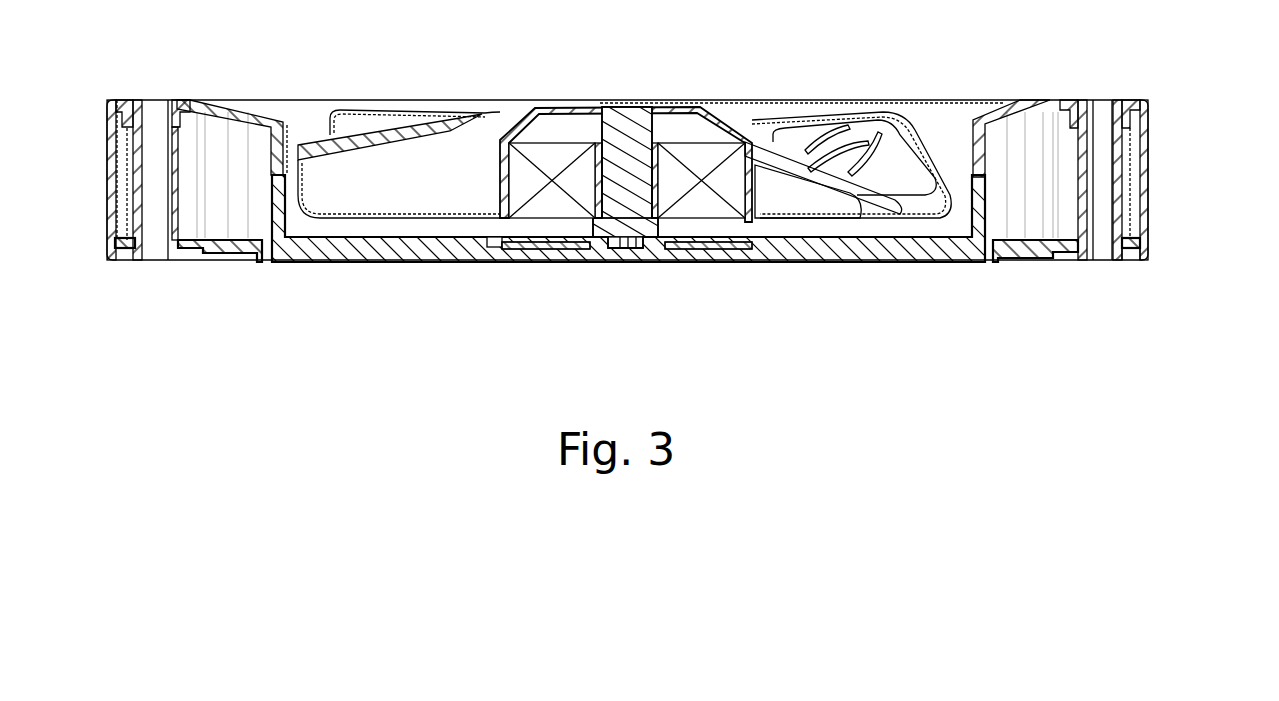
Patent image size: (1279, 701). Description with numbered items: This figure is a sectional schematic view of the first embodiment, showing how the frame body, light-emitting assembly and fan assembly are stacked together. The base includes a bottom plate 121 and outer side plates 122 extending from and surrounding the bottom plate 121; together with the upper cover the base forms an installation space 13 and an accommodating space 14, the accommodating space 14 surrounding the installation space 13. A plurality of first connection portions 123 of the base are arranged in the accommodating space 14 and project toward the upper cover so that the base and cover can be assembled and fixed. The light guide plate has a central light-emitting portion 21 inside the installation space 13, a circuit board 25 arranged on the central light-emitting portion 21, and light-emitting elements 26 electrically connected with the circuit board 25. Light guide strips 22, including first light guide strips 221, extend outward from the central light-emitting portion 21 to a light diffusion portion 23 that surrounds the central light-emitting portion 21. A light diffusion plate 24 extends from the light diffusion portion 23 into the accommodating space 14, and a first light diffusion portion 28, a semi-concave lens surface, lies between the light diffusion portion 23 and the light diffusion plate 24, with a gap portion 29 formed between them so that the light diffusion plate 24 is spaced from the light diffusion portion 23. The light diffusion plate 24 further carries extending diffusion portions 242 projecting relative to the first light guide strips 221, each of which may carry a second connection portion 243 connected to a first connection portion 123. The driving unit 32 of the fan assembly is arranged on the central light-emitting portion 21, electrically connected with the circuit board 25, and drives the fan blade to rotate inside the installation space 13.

The installation space 13 is at (400, 148).
The driving unit 32 is at (700, 138).
The light diffusion portion 23 is at (957, 197).
The accommodating space 14 is at (1018, 126).
The first connection portion 123 is at (1113, 155).
The outer side plate 122 is at (1150, 190).
The extending diffusion portion 242 is at (1140, 243).
The second connection portion 243 is at (1125, 252).
The bottom plate 121 is at (1040, 252).
The light diffusion plate 24 is at (1020, 258).
The first light diffusion portion 28 is at (978, 262).
The first light guide strip 221 is at (740, 250).
The central light-emitting portion 21 is at (650, 264).
The circuit board 25 is at (560, 250).
The light-emitting element 26 is at (490, 250).
The light guide strip 22 is at (340, 265).
The gap portion 29 is at (258, 258).